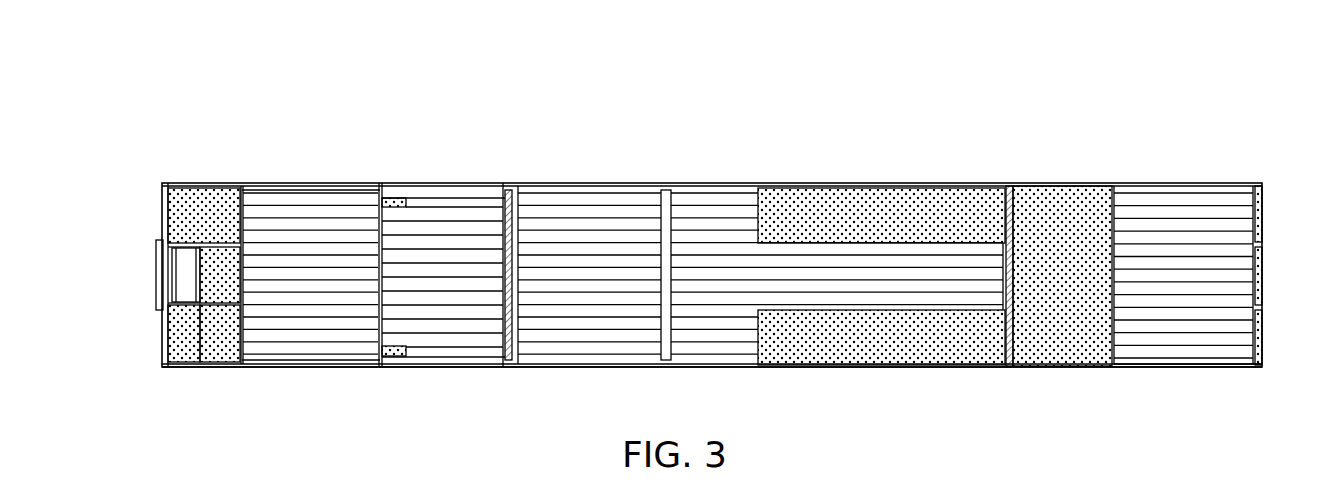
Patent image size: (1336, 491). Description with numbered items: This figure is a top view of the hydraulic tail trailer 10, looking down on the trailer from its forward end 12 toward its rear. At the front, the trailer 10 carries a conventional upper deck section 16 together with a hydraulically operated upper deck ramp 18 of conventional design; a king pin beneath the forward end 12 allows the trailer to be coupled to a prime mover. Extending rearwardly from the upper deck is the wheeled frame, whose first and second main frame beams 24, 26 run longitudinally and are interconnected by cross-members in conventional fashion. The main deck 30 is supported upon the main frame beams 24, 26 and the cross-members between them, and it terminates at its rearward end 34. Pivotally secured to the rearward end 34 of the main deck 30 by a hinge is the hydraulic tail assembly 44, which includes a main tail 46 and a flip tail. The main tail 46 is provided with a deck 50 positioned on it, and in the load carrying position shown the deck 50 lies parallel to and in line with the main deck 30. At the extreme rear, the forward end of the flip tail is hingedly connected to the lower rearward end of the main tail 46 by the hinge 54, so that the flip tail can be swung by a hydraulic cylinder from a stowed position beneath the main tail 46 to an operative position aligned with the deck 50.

The hydraulic tail trailer 10 is at (488, 128).
The forward end 12 is at (150, 218).
The upper deck section 16 is at (305, 208).
The upper deck ramp 18 is at (428, 215).
The first main frame beam 24 is at (644, 370).
The second main frame beam 26 is at (712, 185).
The main deck 30 is at (562, 232).
The rearward end of main deck 34 is at (1009, 185).
The hydraulic tail assembly 44 is at (1139, 155).
The main tail 46 is at (1160, 375).
The deck 50 is at (1183, 275).
The hinge 54 is at (1262, 283).